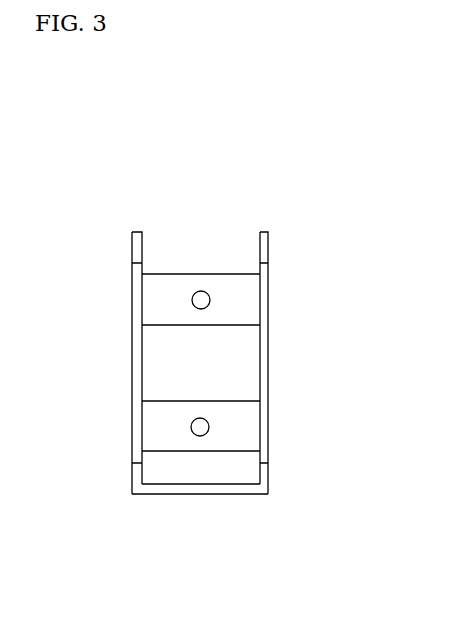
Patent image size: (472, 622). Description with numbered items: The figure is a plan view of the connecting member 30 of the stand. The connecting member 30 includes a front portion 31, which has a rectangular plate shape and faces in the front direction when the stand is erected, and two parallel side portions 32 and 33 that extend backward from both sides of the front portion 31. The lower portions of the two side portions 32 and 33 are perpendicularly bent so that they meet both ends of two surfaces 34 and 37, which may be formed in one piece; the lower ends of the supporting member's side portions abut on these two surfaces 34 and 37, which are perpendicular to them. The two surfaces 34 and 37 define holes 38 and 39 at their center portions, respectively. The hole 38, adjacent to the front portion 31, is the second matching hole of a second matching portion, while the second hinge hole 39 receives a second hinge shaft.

The connecting member 30 is at (343, 170).
The front portion 31 is at (200, 487).
The side portion 32 is at (138, 377).
The side portion 33 is at (262, 368).
The surface 34 is at (243, 441).
The surface 37 is at (234, 283).
The hole 38 is at (206, 427).
The second hinge hole 39 is at (201, 297).